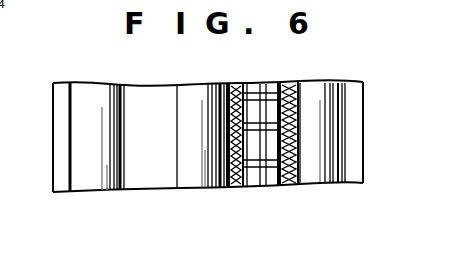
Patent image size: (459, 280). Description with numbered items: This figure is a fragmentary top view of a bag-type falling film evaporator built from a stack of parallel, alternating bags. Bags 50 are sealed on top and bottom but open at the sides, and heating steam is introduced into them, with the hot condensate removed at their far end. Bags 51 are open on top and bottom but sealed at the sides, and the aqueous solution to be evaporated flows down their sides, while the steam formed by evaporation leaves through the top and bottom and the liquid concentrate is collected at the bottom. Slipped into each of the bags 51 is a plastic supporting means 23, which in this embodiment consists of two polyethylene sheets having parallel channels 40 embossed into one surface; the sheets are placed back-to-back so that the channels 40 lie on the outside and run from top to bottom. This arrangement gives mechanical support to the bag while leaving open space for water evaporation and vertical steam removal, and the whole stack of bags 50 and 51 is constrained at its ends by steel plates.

The supporting means 23 is at (258, 185).
The parallel channels 40 is at (296, 85).
The bags 50 is at (87, 93).
The bags 51 is at (148, 181).